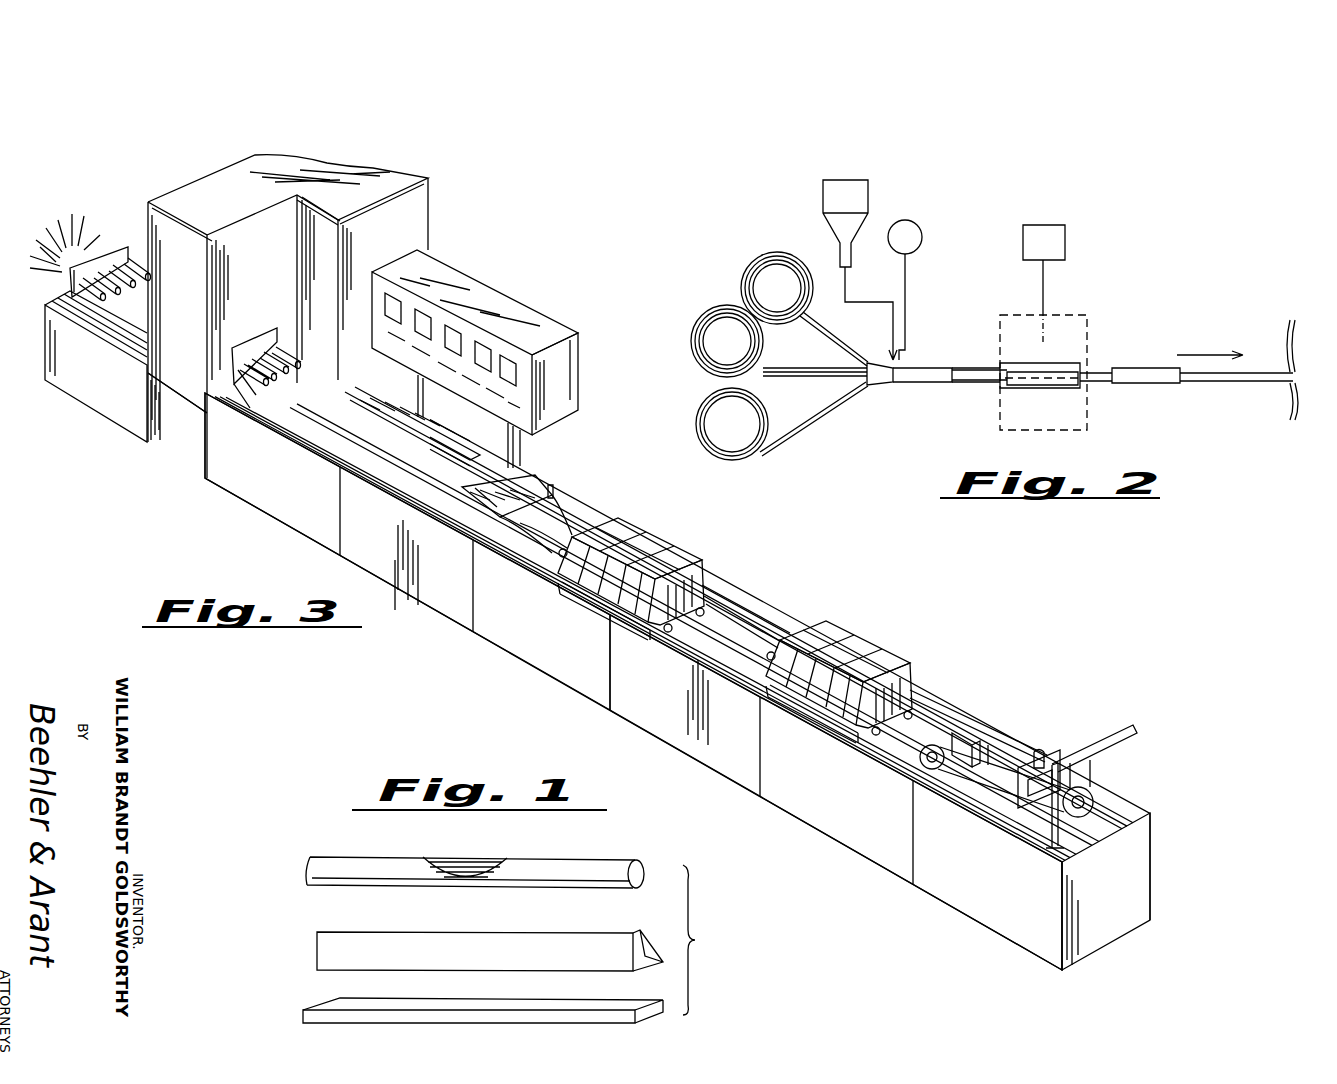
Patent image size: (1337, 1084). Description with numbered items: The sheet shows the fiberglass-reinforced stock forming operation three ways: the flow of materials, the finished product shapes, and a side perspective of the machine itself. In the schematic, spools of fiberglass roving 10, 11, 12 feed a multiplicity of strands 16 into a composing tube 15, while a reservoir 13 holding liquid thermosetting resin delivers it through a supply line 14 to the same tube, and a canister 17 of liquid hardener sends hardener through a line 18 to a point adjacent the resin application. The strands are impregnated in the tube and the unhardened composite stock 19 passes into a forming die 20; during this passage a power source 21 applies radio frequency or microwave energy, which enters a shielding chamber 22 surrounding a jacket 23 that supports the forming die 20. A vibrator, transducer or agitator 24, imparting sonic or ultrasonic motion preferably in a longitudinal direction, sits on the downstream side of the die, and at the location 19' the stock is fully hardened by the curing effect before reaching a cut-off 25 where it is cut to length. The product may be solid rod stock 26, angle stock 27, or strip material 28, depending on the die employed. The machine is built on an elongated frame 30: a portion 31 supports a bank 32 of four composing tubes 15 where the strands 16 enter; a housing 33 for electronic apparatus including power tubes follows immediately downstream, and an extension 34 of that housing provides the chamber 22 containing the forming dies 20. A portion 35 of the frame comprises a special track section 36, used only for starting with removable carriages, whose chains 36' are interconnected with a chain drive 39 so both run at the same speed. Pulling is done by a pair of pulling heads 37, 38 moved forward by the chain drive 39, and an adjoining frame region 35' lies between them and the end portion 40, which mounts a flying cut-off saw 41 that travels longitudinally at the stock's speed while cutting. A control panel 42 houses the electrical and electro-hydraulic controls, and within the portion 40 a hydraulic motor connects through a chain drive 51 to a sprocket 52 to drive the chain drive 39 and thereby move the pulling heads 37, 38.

In FIG. 2, the spool of fiberglass roving 10 is at (786, 270).
In FIG. 2, the spool of fiberglass roving 11 is at (716, 312).
In FIG. 2, the spool of fiberglass roving 12 is at (698, 400).
In FIG. 2, the reservoir 13 is at (822, 195).
In FIG. 2, the supply line 14 is at (870, 304).
In FIG. 3, the composing tube 15 is at (128, 287).
In FIG. 2, the composing tube 15 is at (936, 372).
In FIG. 3, the strands 16 is at (65, 226).
In FIG. 2, the strands 16 is at (840, 350).
In FIG. 2, the canister 17 is at (922, 237).
In FIG. 2, the line 18 is at (912, 284).
In FIG. 2, the unhardened composite stock 19 is at (979, 355).
In FIG. 2, the hardened stock location 19' is at (1186, 399).
In FIG. 2, the forming die 20 is at (1000, 380).
In FIG. 2, the power source 21 is at (1066, 243).
In FIG. 2, the shielding chamber 22 is at (1070, 315).
In FIG. 2, the jacket 23 is at (1074, 357).
In FIG. 2, the vibrator, transducer or agitator 24 is at (1160, 367).
In FIG. 2, the cut-off 25 is at (1286, 330).
In FIG. 1, the solid rod stock 26 is at (580, 858).
In FIG. 1, the angle stock 27 is at (573, 940).
In FIG. 1, the strip material 28 is at (581, 1008).
In FIG. 3, the elongated frame 30 is at (513, 669).
In FIG. 3, the frame portion 31 is at (101, 405).
In FIG. 3, the bank of composing tubes 32 is at (120, 246).
In FIG. 3, the housing 33 is at (416, 233).
In FIG. 3, the housing extension 34 is at (190, 398).
In FIG. 3, the frame portion 35 is at (407, 551).
In FIG. 3, the frame section 35' is at (836, 792).
In FIG. 3, the track section 36 is at (468, 452).
In FIG. 3, the chains 36' is at (565, 513).
In FIG. 3, the pulling head 37 is at (698, 566).
In FIG. 3, the pulling head 38 is at (889, 650).
In FIG. 3, the chain drive 39 is at (750, 632).
In FIG. 3, the frame portion 40 is at (1017, 932).
In FIG. 3, the flying cut-off saw 41 is at (1136, 738).
In FIG. 3, the control panel 42 is at (506, 304).
In FIG. 3, the chain drive 51 is at (988, 776).
In FIG. 3, the sprocket 52 is at (962, 792).